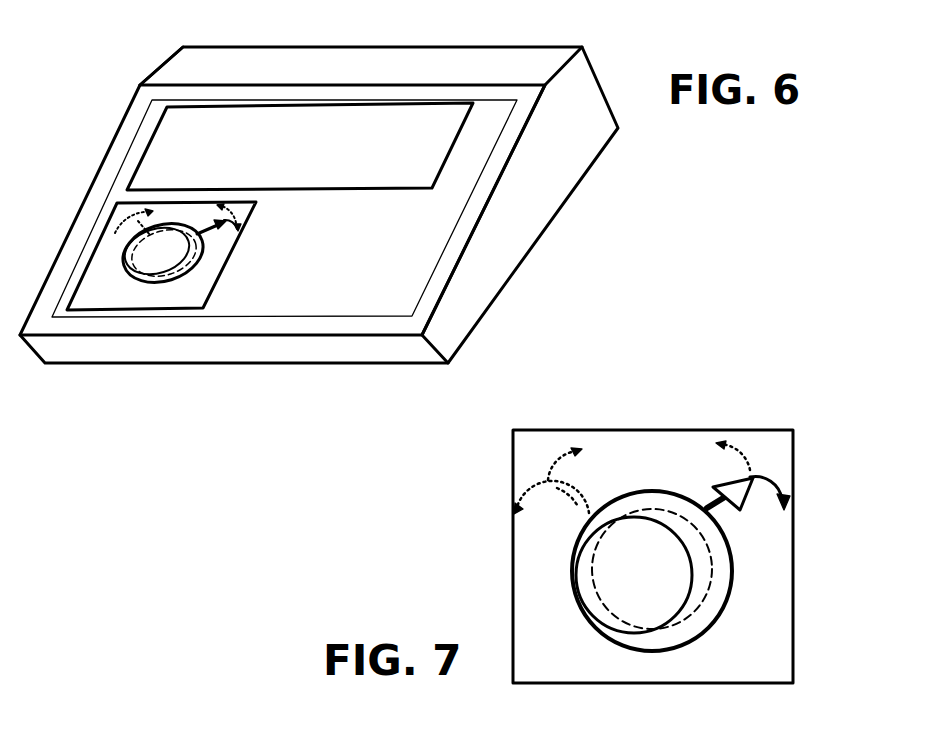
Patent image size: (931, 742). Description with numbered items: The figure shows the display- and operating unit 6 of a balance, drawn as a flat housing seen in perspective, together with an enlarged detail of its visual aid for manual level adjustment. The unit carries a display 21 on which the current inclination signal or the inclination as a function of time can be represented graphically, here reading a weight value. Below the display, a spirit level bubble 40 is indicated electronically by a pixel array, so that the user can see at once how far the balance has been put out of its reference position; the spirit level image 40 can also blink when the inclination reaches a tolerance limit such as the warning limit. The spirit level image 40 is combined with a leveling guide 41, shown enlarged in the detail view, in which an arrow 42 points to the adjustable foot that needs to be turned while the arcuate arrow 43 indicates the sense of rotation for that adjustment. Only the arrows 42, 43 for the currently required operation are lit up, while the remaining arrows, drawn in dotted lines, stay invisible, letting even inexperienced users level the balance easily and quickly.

In FIG. 6, the display- and operating unit 6 is at (255, 364).
In FIG. 6, the display 21 is at (165, 167).
In FIG. 6, the spirit level bubble 40 is at (143, 263).
In FIG. 7, the spirit level bubble 40 is at (583, 572).
In FIG. 6, the leveling guide 41 is at (107, 252).
In FIG. 7, the leveling guide 41 is at (647, 429).
In FIG. 7, the arrow 42 is at (725, 505).
In FIG. 7, the arcuate arrow 43 is at (768, 481).